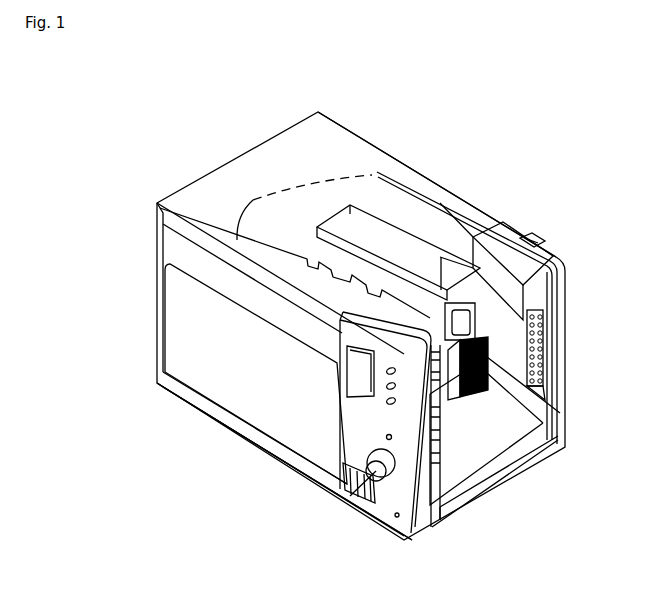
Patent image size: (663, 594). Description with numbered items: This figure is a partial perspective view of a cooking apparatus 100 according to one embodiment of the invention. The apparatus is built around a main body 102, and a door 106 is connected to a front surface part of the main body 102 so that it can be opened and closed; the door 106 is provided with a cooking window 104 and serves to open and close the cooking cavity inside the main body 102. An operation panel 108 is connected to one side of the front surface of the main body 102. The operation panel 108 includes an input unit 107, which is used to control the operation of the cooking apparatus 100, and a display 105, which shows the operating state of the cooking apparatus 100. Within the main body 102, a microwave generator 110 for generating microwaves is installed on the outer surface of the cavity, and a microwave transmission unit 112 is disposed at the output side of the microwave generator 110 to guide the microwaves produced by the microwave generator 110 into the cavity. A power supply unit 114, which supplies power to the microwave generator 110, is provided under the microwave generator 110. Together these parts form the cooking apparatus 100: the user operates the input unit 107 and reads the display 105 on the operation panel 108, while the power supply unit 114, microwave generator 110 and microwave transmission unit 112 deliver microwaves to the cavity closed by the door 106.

The cooking apparatus 100 is at (111, 111).
The main body 102 is at (332, 147).
The cooking window 104 is at (216, 334).
The display 105 is at (357, 377).
The door 106 is at (230, 410).
The input unit 107 is at (362, 495).
The operation panel 108 is at (272, 552).
The microwave generator 110 is at (490, 313).
The microwave transmission unit 112 is at (392, 248).
The power supply unit 114 is at (487, 350).